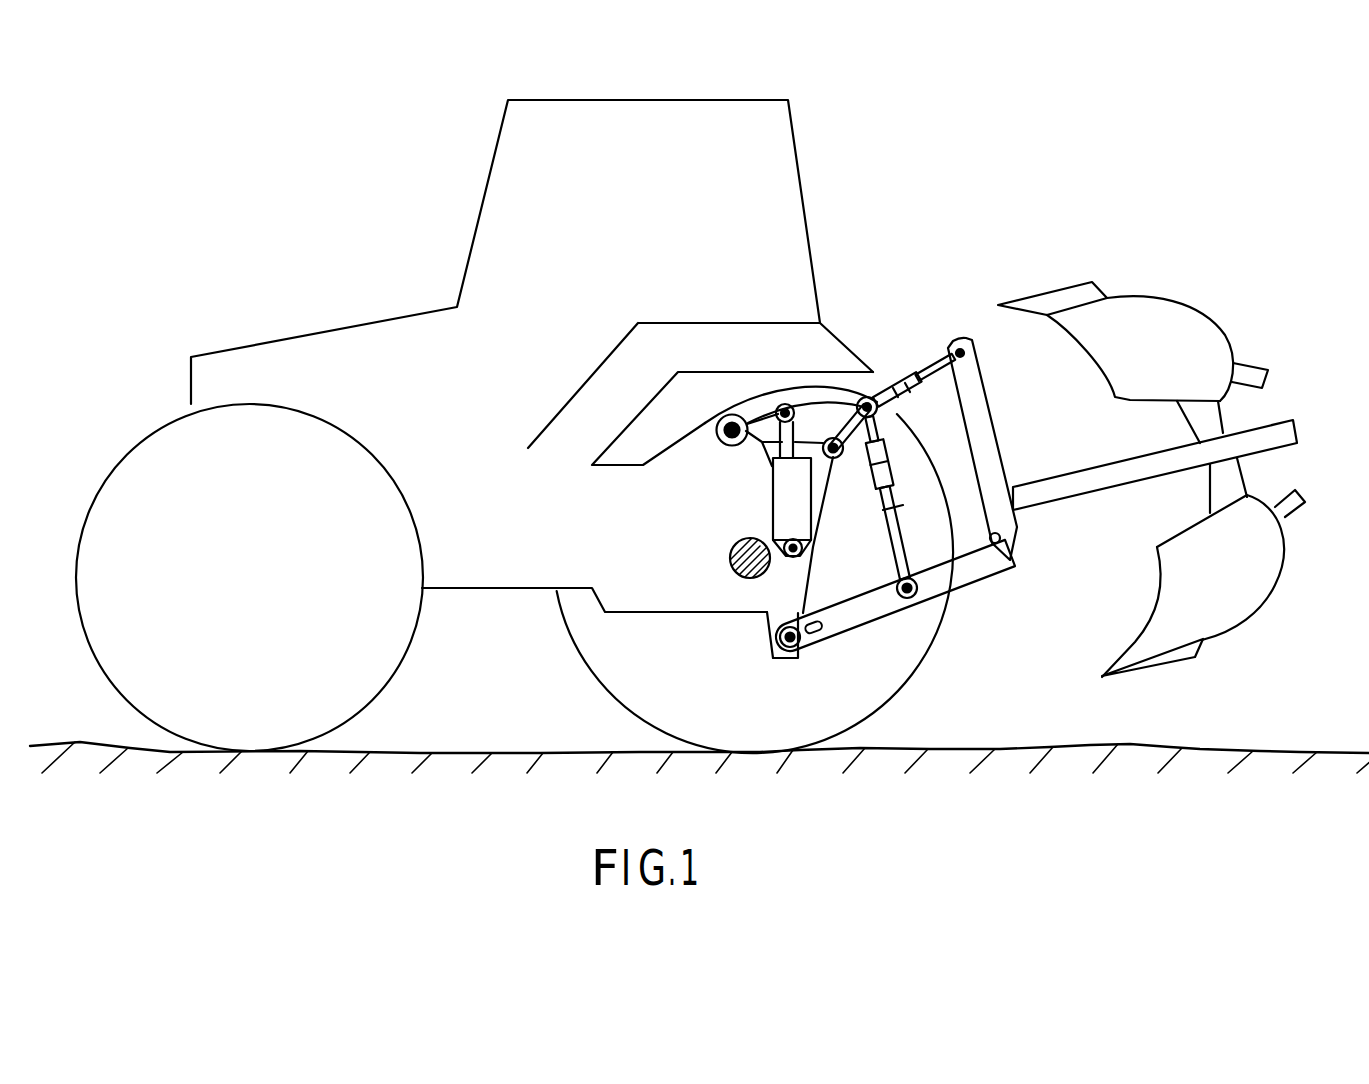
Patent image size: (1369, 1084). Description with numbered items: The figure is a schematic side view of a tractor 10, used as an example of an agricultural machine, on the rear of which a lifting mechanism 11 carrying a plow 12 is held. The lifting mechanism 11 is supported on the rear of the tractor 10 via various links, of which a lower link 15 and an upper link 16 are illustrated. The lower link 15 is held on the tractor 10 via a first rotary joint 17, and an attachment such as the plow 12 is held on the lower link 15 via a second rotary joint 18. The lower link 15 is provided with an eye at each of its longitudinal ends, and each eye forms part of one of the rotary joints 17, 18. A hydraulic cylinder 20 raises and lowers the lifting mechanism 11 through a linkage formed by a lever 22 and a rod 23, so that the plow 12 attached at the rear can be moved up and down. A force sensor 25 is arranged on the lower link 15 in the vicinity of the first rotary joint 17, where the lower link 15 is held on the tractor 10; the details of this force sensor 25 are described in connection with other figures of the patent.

The tractor 10 is at (343, 246).
The lifting mechanism 11 is at (963, 300).
The plow 12 is at (1238, 298).
The lower link 15 is at (955, 573).
The upper link 16 is at (922, 377).
The first rotary joint 17 is at (773, 645).
The second rotary joint 18 is at (999, 545).
The hydraulic cylinder 20 is at (790, 498).
The lever 22 is at (802, 393).
The rod 23 is at (890, 530).
The force sensor 25 is at (812, 643).